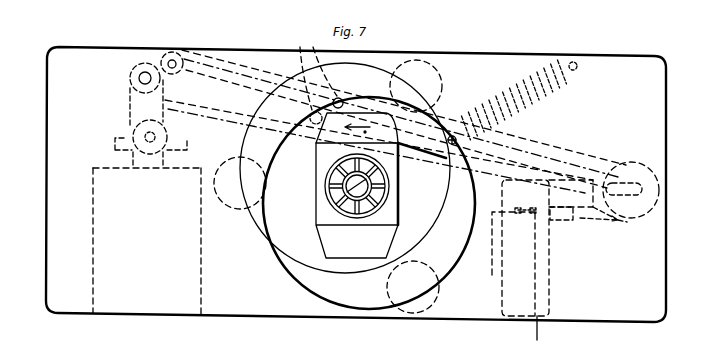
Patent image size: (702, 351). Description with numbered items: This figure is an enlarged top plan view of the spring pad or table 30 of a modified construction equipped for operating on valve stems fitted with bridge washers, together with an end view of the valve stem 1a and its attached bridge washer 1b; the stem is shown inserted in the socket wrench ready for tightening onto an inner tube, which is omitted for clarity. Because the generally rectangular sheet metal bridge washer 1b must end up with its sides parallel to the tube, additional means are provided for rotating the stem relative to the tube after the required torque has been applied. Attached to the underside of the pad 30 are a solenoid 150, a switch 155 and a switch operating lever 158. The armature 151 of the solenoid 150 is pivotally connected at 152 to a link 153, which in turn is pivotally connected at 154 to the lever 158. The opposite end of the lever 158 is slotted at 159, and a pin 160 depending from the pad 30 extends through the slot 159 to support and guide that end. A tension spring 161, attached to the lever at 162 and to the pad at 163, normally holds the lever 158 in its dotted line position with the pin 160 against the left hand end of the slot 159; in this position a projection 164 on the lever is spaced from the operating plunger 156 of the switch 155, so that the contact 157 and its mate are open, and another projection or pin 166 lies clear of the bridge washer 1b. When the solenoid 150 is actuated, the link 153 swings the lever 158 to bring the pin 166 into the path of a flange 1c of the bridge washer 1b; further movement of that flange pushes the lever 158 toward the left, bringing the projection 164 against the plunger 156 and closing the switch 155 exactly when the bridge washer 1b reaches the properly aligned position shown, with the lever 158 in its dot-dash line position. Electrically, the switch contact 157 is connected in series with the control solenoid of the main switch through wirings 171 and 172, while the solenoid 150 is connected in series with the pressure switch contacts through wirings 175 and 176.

The spring pad or table 30 is at (48, 117).
The pivot connection 154 is at (179, 52).
The link 153 is at (128, 107).
The armature 151 is at (114, 143).
The pivot connection 152 is at (172, 132).
The solenoid 150 is at (201, 284).
The electrical connecting member or wiring 175 is at (110, 310).
The electrical connecting member or wiring 176 is at (189, 314).
The switch operating lever 158 is at (548, 142).
The operating plunger 156 is at (585, 225).
The projection or pin 166 is at (319, 79).
The flange 1c is at (315, 143).
The valve stem 1a is at (386, 179).
The bridge washer 1b is at (398, 211).
The tension spring 161 is at (503, 82).
The spring attachment point 163 is at (577, 66).
The spring attachment point 162 is at (453, 134).
The slot 159 is at (640, 170).
The pin 160 is at (613, 181).
The projection 164 is at (625, 222).
The switch 155 is at (549, 290).
The contact 157 is at (550, 209).
The electrical connecting member or wiring 171 is at (490, 256).
The electrical connecting member or wiring 172 is at (537, 337).